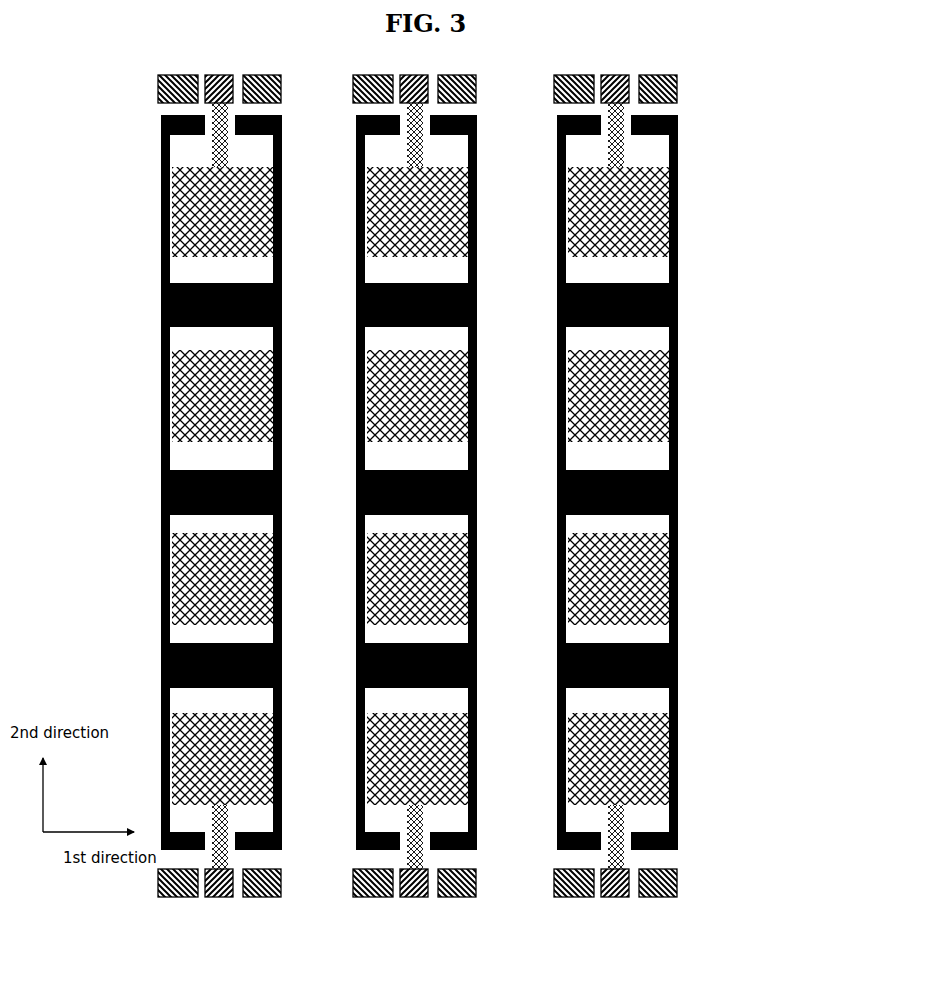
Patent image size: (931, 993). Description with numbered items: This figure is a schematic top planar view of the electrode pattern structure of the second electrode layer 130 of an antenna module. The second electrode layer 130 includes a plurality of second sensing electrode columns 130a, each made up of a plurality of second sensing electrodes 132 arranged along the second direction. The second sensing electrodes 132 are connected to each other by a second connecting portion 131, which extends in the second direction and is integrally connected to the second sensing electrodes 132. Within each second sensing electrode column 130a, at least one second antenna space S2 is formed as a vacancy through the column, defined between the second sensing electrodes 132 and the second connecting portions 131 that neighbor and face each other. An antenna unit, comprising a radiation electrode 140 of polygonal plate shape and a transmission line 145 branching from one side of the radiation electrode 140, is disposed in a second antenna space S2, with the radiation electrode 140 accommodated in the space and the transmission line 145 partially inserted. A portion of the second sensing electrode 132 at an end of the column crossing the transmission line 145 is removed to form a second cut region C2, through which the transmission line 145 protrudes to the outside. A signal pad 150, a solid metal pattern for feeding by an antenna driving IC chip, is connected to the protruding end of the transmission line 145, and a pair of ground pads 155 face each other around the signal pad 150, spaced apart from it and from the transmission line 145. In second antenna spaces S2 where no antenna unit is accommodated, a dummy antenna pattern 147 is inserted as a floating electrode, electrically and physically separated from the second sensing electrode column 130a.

The second electrode layer 130 is at (93, 160).
The second sensing electrode column 130a is at (681, 494).
The second connecting portion 131 is at (678, 577).
The second sensing electrode 132 is at (678, 660).
The radiation electrode 140 is at (677, 746).
The transmission line 145 is at (620, 830).
The dummy antenna pattern 147 is at (162, 590).
The signal pad 150 is at (641, 872).
The ground pad 155 is at (680, 883).
The second cut region C2 is at (204, 146).
The second antenna space S2 is at (196, 459).